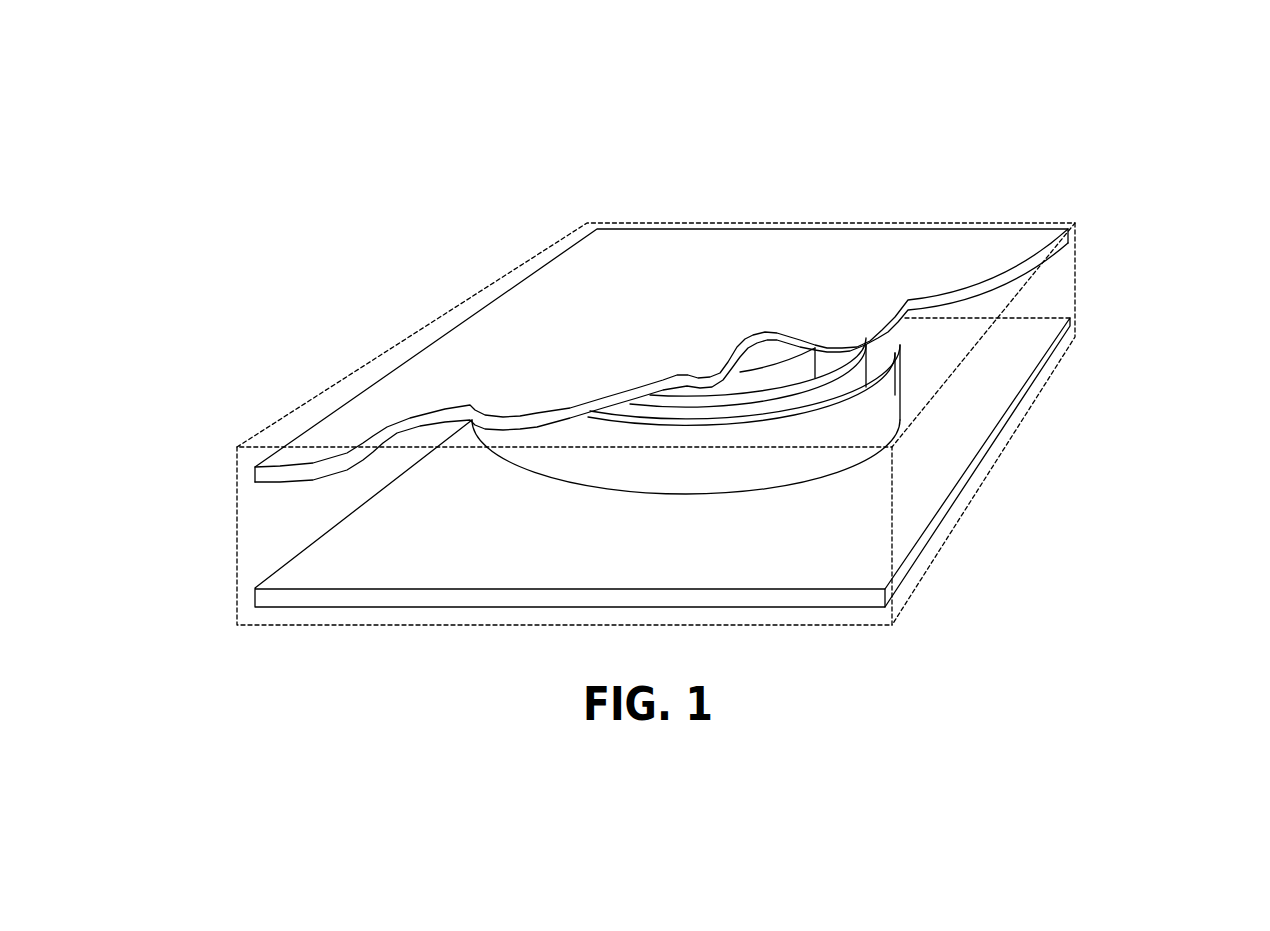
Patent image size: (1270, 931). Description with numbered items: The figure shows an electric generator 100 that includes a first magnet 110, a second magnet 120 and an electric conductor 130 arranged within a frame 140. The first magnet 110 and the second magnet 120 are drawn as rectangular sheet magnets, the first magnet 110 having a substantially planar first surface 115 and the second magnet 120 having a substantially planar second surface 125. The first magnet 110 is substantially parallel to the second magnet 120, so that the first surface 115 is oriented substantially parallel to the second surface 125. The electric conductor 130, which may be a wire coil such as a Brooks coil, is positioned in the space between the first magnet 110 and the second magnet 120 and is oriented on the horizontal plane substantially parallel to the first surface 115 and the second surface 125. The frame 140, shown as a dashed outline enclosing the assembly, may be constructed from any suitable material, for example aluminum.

The electric generator 100 is at (1040, 138).
The first magnet 110 is at (257, 470).
The first surface 115 is at (987, 297).
The second magnet 120 is at (260, 600).
The second surface 125 is at (468, 497).
The electric conductor 130 is at (850, 435).
The frame 140 is at (698, 218).